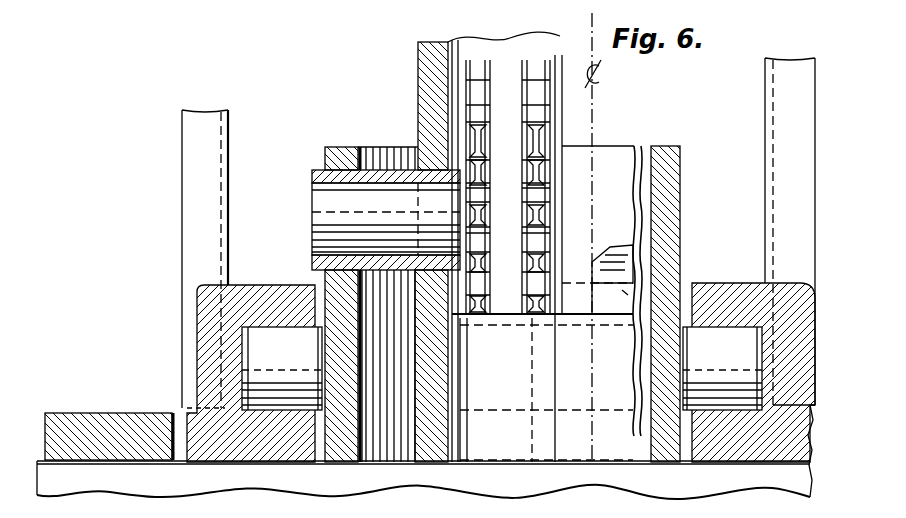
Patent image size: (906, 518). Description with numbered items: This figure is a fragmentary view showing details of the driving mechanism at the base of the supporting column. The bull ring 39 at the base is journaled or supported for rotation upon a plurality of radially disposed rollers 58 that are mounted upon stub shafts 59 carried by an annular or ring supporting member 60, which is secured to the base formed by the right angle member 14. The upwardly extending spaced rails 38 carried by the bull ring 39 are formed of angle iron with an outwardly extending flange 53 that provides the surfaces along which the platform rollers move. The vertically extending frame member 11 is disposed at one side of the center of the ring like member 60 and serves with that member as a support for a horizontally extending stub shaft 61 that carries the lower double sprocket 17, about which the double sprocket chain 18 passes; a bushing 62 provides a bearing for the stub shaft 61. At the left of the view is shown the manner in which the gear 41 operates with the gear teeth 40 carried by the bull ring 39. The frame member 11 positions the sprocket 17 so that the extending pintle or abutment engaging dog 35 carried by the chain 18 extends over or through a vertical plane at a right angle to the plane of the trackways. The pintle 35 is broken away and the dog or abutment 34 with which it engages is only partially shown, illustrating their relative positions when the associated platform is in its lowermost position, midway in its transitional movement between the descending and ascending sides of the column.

The frame member 11 is at (418, 80).
The right angled frame forming member 14 is at (551, 486).
The lower double sprocket 17 is at (505, 172).
The sprocket chain 18 is at (531, 80).
The dog or abutment 34 is at (600, 250).
The pintle or dog engaging arm 35 is at (607, 318).
The spaced rails 38 is at (230, 146).
The bull ring 39 is at (258, 285).
The gear teeth 40 is at (175, 413).
The gear 41 is at (93, 425).
The flange 53 is at (192, 186).
The rollers 58 is at (276, 353).
The stub shafts 59 is at (318, 338).
The annular or ring supporting member 60 is at (345, 452).
The stub shaft 61 is at (318, 200).
The bushing 62 is at (383, 162).